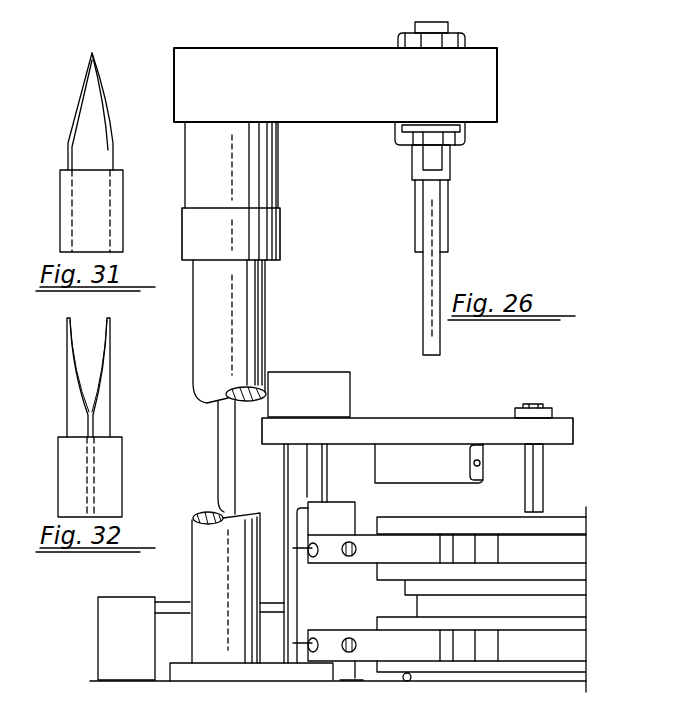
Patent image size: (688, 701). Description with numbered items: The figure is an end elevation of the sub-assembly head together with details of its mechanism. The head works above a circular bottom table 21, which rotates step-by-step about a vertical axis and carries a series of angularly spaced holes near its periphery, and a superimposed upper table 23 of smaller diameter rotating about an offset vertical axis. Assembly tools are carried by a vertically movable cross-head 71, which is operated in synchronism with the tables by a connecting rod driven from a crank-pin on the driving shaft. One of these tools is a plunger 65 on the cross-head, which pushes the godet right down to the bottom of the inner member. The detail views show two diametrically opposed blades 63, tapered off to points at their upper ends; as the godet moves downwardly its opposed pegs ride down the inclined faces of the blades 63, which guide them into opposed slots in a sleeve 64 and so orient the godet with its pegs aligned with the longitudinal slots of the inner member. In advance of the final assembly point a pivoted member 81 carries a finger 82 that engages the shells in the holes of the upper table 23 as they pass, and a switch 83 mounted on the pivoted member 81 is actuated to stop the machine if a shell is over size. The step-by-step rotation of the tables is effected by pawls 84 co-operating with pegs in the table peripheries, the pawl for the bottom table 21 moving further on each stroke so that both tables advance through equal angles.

In FIG. 26, the bottom table 21 is at (563, 592).
In FIG. 26, the upper table 23 is at (572, 528).
In FIG. 31, the blades 63 is at (94, 104).
In FIG. 32, the blades 63 is at (72, 393).
In FIG. 31, the sleeve 64 is at (118, 208).
In FIG. 32, the sleeve 64 is at (110, 478).
In FIG. 26, the plunger 65 is at (423, 291).
In FIG. 26, the cross-head 71 is at (317, 70).
In FIG. 26, the pivoted member 81 is at (438, 433).
In FIG. 26, the finger 82 is at (543, 480).
In FIG. 26, the switch 83 is at (310, 382).
In FIG. 26, the pawls 84 is at (368, 543).